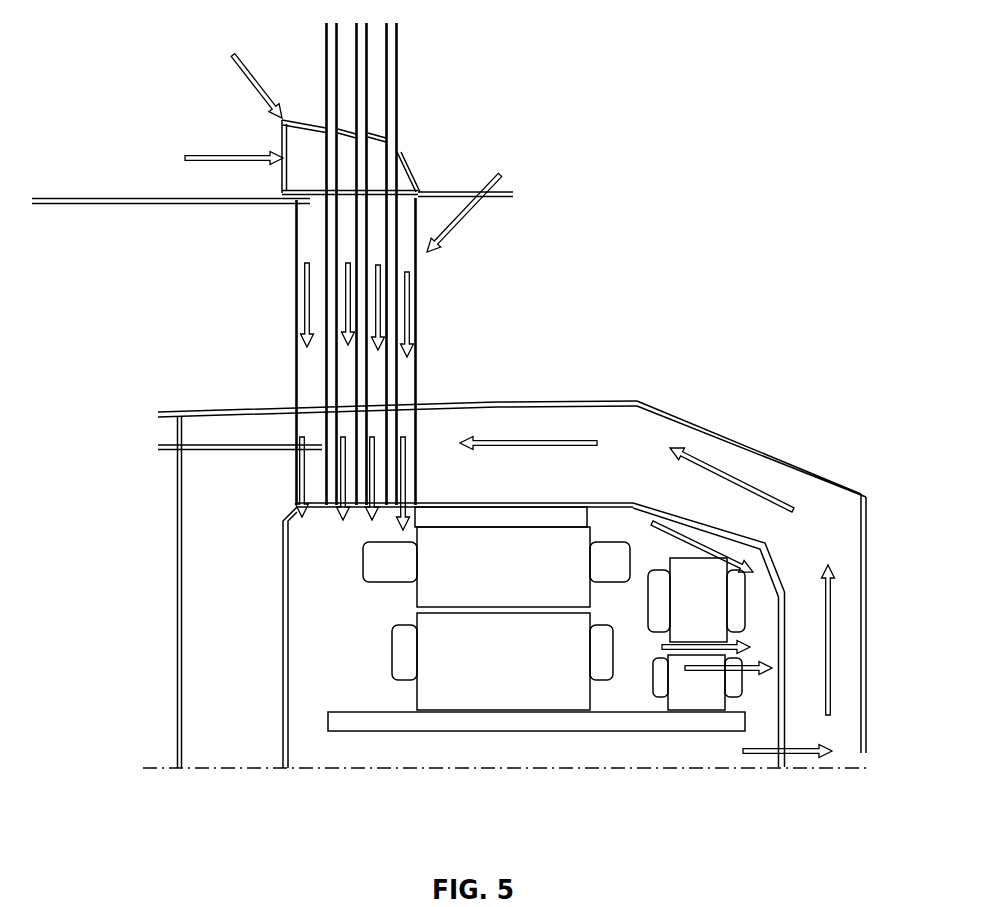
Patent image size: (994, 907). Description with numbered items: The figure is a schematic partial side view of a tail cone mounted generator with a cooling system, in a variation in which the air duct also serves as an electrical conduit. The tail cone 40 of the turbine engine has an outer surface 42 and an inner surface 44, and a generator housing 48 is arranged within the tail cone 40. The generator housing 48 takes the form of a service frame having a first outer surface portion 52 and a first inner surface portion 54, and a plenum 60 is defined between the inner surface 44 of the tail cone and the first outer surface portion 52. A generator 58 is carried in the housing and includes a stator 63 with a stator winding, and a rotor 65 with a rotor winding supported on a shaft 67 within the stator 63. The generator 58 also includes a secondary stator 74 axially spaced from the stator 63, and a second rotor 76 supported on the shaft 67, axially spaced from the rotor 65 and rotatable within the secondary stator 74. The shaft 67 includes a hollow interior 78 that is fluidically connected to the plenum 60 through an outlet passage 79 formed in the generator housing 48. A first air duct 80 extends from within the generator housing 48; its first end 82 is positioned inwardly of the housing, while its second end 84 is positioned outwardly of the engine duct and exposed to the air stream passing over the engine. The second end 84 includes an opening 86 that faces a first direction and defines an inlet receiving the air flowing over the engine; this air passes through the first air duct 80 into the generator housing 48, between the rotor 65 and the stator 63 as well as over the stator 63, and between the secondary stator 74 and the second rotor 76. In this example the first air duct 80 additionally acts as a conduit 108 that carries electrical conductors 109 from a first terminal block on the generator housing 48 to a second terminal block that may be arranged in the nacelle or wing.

The tail cone 40 is at (698, 392).
The outer surface 42 is at (465, 401).
The inner surface 44 is at (735, 448).
The generator housing 48 is at (803, 653).
The first outer surface portion 52 is at (597, 501).
The first inner surface portion 54 is at (627, 513).
The generator 58 is at (307, 595).
The plenum 60 is at (632, 452).
The stator 63 is at (437, 587).
The rotor 65 is at (435, 682).
The shaft 67 is at (363, 718).
The secondary stator 74 is at (713, 687).
The second rotor 76 is at (700, 620).
The hollow interior 78 is at (478, 740).
The outlet passage 79 is at (785, 760).
The first air duct 80 is at (452, 310).
The first end 82 is at (420, 503).
The second end 84 is at (402, 178).
The opening 86 is at (302, 128).
The conduit 108 is at (308, 244).
The electrical conductors 109 is at (313, 376).